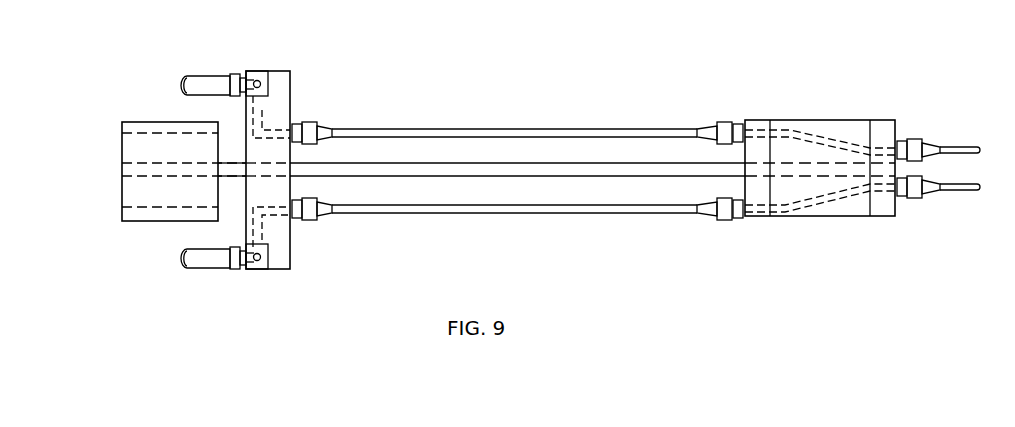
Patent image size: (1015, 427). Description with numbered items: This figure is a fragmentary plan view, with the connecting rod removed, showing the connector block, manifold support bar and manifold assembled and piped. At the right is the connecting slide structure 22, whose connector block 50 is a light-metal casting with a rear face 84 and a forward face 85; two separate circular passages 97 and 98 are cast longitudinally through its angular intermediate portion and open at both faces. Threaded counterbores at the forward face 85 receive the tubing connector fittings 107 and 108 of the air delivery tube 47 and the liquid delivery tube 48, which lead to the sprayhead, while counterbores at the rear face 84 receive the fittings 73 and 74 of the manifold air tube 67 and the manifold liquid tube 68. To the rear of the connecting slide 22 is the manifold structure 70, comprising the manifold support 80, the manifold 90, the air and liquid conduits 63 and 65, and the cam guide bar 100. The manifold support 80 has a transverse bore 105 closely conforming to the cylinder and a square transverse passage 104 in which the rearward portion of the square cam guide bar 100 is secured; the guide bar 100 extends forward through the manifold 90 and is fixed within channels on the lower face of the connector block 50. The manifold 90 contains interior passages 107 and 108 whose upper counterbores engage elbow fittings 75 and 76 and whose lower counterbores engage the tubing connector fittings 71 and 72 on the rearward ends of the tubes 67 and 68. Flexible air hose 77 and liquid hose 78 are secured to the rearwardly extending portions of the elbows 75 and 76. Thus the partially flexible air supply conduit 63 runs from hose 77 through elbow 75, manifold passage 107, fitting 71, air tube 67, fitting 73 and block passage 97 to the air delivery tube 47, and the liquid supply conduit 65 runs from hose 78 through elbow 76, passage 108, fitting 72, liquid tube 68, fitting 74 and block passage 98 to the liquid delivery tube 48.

The connecting slide structure 22 is at (882, 219).
The air delivery tube 47 is at (973, 183).
The liquid delivery tube 48 is at (975, 147).
The connector block 50 is at (833, 120).
The air supply conduit 63 is at (609, 215).
The liquid supply conduit 65 is at (469, 127).
The manifold air tube 67 is at (497, 213).
The manifold liquid tube 68 is at (350, 130).
The manifold structure 70 is at (269, 70).
The tubing connector fitting 71 is at (320, 217).
The tubing connector fitting 72 is at (312, 125).
The tubing connector fitting 73 is at (712, 216).
The tubing connector fitting 74 is at (710, 123).
The elbow fitting 75 is at (253, 270).
The elbow fitting 76 is at (255, 79).
The air hose 77 is at (203, 268).
The liquid hose 78 is at (197, 77).
The manifold support 80 is at (133, 122).
The rear face 84 is at (745, 184).
The forward face 85 is at (897, 135).
The manifold 90 is at (290, 92).
The air passage 97 is at (815, 202).
The liquid passage 98 is at (787, 130).
The cam guide bar 100 is at (365, 162).
The transverse passage 104 is at (135, 177).
The transverse bore 105 is at (145, 133).
The air passage 107 is at (268, 217).
The liquid passage 108 is at (263, 110).